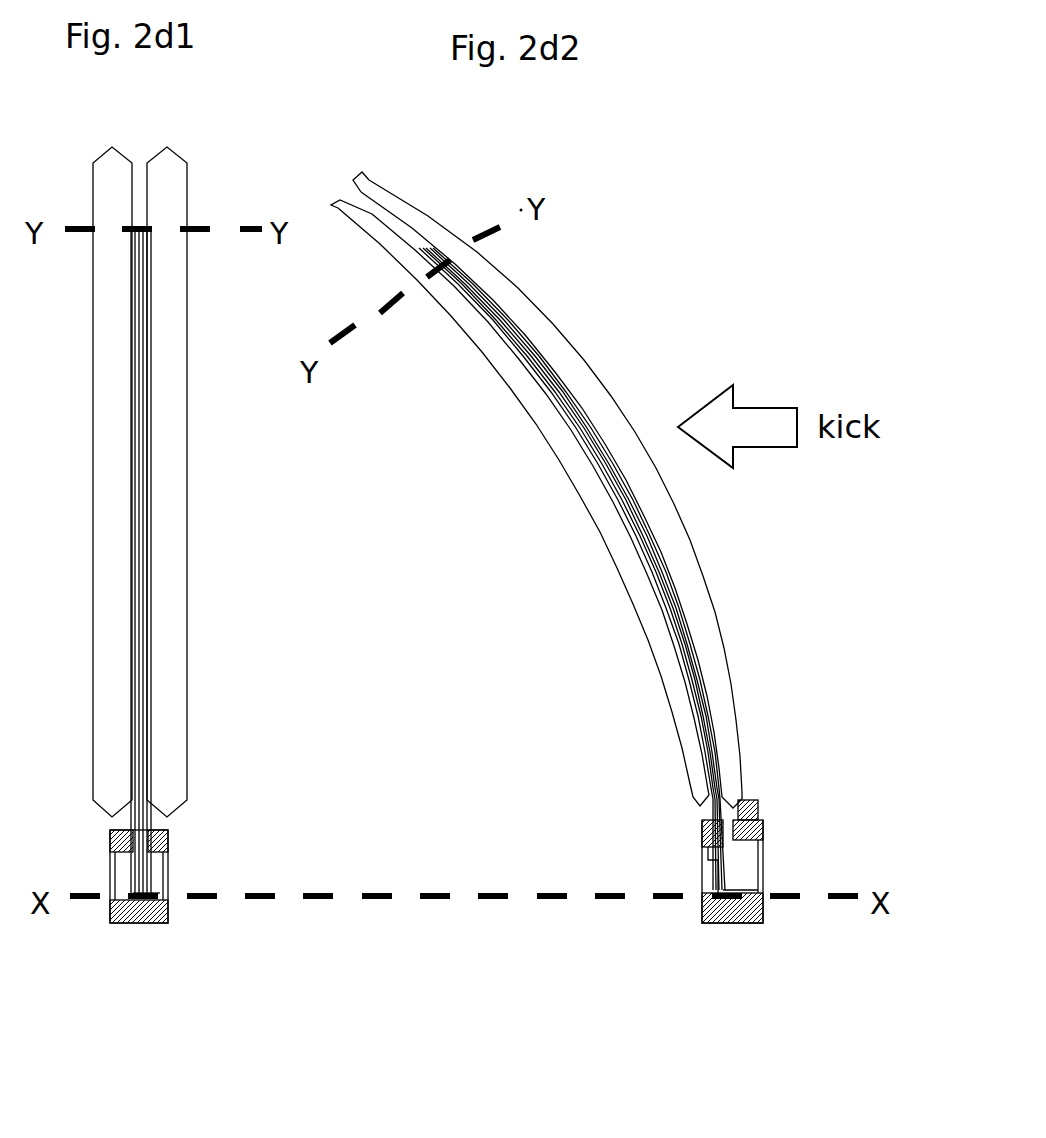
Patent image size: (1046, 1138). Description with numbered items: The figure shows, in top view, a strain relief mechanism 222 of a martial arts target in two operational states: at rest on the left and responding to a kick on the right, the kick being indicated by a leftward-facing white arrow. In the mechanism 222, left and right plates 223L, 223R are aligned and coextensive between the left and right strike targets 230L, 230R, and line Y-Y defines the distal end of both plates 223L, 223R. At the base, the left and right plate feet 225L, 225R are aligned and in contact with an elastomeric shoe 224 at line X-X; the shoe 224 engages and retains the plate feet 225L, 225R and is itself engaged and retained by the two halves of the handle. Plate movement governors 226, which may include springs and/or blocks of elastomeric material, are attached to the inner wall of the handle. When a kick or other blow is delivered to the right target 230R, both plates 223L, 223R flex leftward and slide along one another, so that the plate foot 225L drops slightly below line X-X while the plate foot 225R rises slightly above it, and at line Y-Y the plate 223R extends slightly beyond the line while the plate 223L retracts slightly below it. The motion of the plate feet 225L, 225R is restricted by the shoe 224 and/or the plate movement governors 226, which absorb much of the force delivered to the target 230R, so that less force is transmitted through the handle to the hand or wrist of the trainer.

In FIG. 2d1, the strain relief mechanism 222 is at (300, 54).
In FIG. 2d2, the strain relief mechanism 222 is at (733, 66).
In FIG. 2d1, the left plate 223L is at (133, 712).
In FIG. 2d2, the left plate 223L is at (701, 697).
In FIG. 2d1, the right plate 223R is at (148, 237).
In FIG. 2d2, the right plate 223R is at (422, 252).
In FIG. 2d1, the elastomeric shoe 224 is at (155, 916).
In FIG. 2d2, the elastomeric shoe 224 is at (723, 917).
In FIG. 2d1, the left plate foot 225L is at (127, 880).
In FIG. 2d2, the left plate foot 225L is at (715, 880).
In FIG. 2d1, the right plate foot 225R is at (155, 872).
In FIG. 2d2, the right plate foot 225R is at (745, 863).
In FIG. 2d1, the plate movement governor 226 is at (122, 840).
In FIG. 2d2, the plate movement governor 226 is at (710, 799).
In FIG. 2d1, the left strike target 230L is at (113, 438).
In FIG. 2d2, the left strike target 230L is at (503, 363).
In FIG. 2d1, the right strike target 230R is at (158, 550).
In FIG. 2d2, the right strike target 230R is at (637, 463).